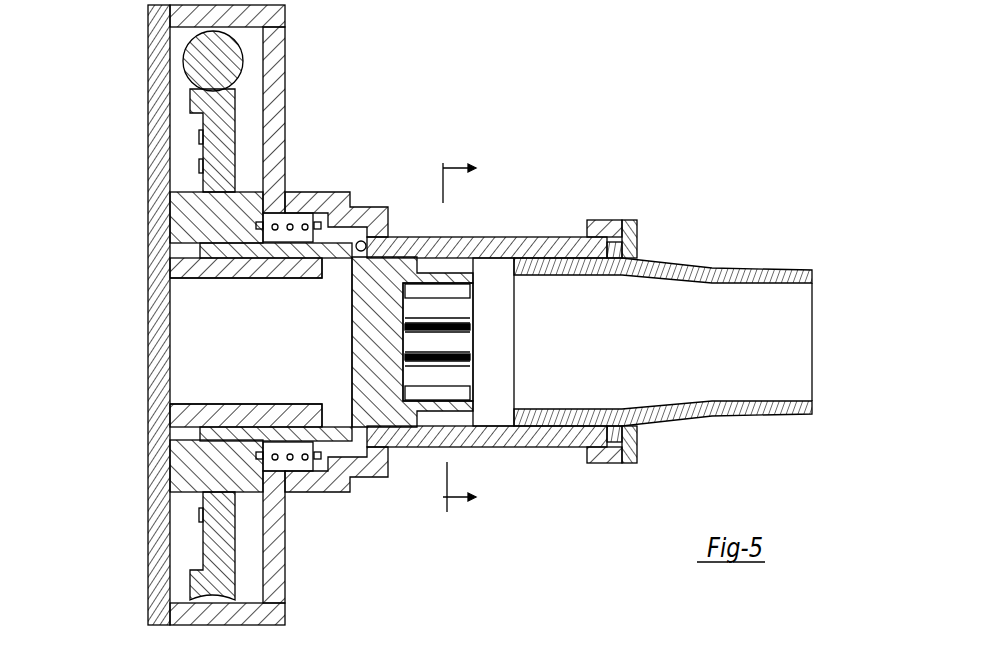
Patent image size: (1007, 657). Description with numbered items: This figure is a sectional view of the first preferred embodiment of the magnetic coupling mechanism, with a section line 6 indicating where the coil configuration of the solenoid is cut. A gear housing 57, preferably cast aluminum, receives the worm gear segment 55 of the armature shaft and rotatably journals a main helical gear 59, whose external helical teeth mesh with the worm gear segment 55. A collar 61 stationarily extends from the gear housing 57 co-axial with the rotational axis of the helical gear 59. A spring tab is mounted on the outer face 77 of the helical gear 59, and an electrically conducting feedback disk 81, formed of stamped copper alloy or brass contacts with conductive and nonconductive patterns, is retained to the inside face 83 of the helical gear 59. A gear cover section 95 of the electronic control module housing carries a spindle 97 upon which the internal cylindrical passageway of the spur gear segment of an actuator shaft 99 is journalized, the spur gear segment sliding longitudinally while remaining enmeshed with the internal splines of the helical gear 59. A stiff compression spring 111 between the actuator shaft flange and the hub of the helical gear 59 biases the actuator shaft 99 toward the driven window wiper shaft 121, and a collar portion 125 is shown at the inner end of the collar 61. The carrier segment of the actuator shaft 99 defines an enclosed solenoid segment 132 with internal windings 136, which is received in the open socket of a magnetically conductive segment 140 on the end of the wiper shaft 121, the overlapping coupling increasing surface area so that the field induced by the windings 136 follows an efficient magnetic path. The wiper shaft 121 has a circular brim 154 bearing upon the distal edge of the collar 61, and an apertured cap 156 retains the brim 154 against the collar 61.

The worm gear segment 55 is at (207, 56).
The gear housing 57 is at (280, 103).
The main helical gear 59 is at (226, 147).
The collar 61 is at (542, 240).
The outer face 77 is at (230, 543).
The feedback disk 81 is at (200, 144).
The inside face 83 is at (197, 538).
The gear cover section 95 is at (157, 340).
The spindle 97 is at (265, 268).
The actuator shaft 99 is at (280, 418).
The compression spring 111 is at (292, 227).
The window wiper shaft 121 is at (603, 318).
The collar 125 is at (390, 233).
The solenoid segment 132 is at (373, 404).
The internal windings 136 is at (450, 333).
The magnetically conductive segment 140 is at (503, 400).
The circular brim 154 is at (615, 430).
The cap 156 is at (617, 222).
The section line 6- 6 is at (466, 334).